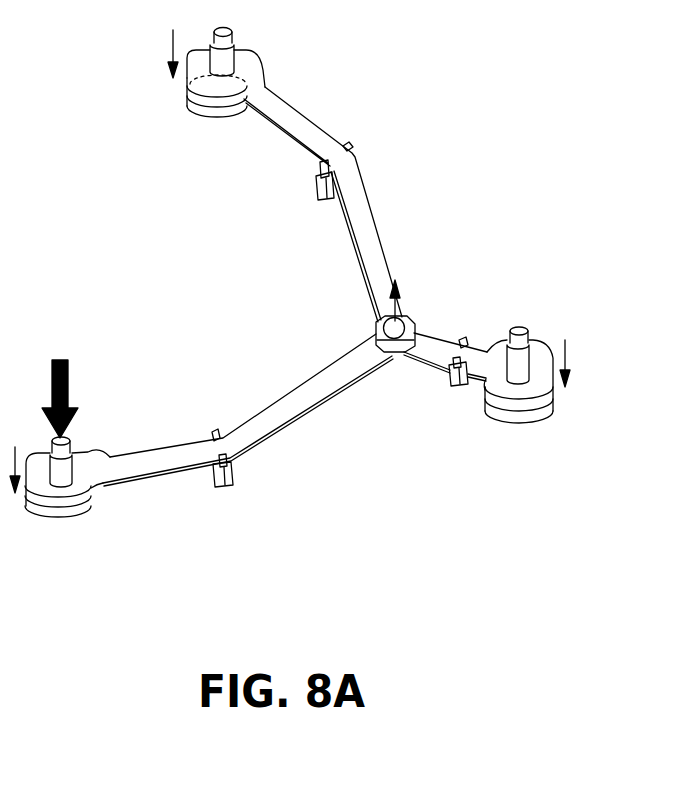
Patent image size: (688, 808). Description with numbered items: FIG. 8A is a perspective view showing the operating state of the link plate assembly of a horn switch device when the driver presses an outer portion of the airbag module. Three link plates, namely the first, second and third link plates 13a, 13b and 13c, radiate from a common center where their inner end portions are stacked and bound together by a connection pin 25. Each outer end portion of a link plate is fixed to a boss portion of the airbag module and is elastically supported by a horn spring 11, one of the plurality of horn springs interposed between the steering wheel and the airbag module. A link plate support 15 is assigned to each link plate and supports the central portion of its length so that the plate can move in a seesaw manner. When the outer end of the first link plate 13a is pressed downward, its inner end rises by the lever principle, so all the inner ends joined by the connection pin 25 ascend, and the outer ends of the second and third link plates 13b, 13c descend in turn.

The horn spring 11 is at (196, 106).
The first link plate 13a is at (152, 457).
The second link plate 13b is at (428, 352).
The third link plate 13c is at (300, 120).
The link plate support 15 is at (313, 192).
The connection pin 25 is at (410, 315).